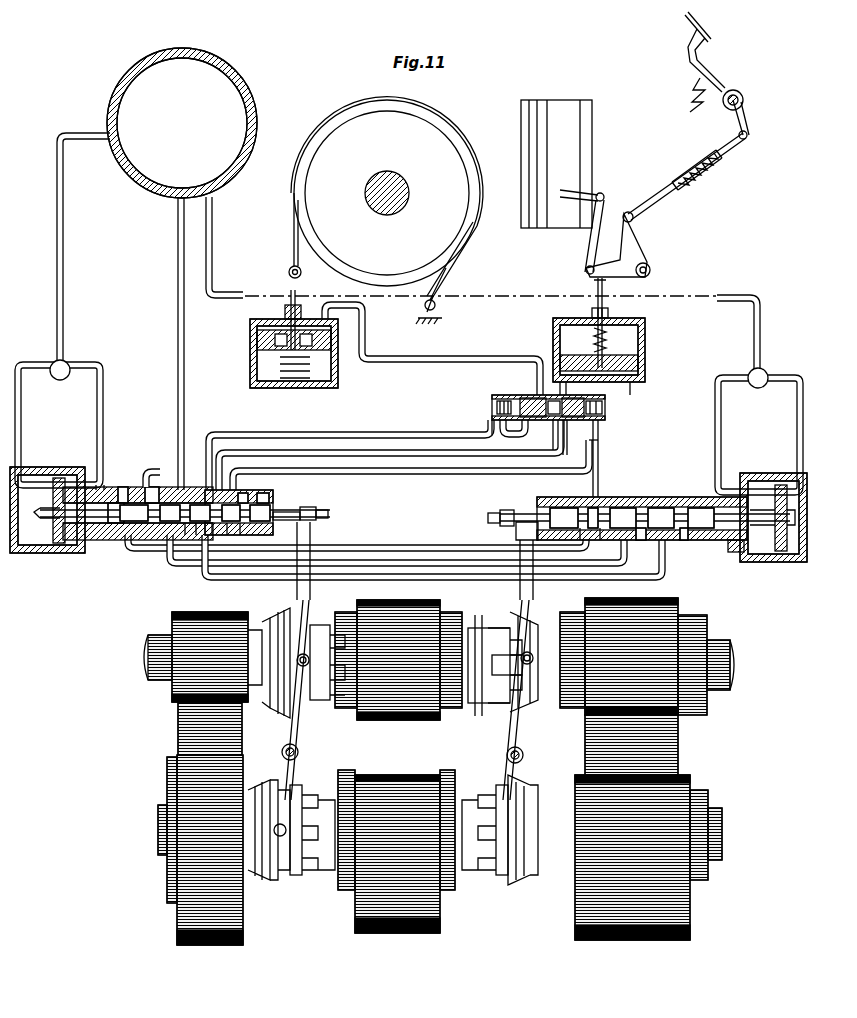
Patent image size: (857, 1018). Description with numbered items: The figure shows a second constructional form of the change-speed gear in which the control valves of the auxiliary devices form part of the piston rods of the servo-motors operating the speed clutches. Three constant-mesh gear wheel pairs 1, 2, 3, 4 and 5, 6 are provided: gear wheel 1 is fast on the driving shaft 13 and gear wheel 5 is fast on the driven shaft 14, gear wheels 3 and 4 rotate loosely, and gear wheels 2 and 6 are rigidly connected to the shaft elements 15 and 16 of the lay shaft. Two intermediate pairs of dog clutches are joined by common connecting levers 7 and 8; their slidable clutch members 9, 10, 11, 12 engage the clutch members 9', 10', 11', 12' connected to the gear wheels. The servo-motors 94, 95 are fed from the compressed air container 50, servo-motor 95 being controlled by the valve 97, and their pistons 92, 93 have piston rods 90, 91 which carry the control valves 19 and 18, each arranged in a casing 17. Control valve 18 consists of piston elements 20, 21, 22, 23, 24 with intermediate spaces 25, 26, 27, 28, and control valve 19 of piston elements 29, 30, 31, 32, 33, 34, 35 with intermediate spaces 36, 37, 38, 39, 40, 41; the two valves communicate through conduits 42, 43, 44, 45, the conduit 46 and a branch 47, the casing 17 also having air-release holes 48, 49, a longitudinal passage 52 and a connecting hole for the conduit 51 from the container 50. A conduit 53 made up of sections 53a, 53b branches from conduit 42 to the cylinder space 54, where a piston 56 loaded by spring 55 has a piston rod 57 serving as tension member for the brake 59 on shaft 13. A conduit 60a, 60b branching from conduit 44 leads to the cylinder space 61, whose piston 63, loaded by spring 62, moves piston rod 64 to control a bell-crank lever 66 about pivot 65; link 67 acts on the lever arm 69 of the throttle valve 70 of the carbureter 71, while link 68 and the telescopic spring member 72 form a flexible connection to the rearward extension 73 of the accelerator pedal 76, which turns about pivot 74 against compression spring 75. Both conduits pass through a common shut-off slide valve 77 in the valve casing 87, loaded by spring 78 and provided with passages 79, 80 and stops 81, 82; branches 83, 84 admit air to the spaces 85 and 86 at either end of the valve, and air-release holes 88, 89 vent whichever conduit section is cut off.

The gear wheel 1 is at (200, 670).
The gear wheel 2 is at (215, 900).
The gear wheel 3 is at (380, 708).
The gear wheel 4 is at (405, 890).
The gear wheel 5 is at (660, 690).
The gear wheel 6 is at (628, 890).
The connecting lever 7 is at (292, 728).
The connecting lever 8 is at (512, 737).
The slidable clutch member 9 is at (268, 668).
The clutch member 9' is at (321, 611).
The slidable clutch member 10 is at (269, 814).
The clutch member 10' is at (317, 811).
The slidable clutch member 11 is at (503, 619).
The clutch member 11' is at (502, 678).
The slidable clutch member 12 is at (532, 819).
The clutch member 12' is at (485, 852).
The driving shaft 13 is at (412, 193).
The driven shaft 14 is at (722, 660).
The shaft element 15 is at (160, 838).
The shaft element 16 is at (720, 840).
The casing 17 is at (273, 498).
The control valve 18 is at (506, 527).
The control valve 19 is at (312, 510).
The piston element 20 is at (728, 545).
The piston element 21 is at (690, 540).
The piston element 22 is at (648, 540).
The piston element 23 is at (620, 540).
The piston element 24 is at (566, 508).
The intermediate space 25 is at (700, 508).
The intermediate space 26 is at (660, 508).
The intermediate space 27 is at (624, 508).
The intermediate space 28 is at (598, 505).
The piston element 29 is at (268, 488).
The piston element 30 is at (246, 488).
The piston element 31 is at (222, 490).
The piston element 32 is at (196, 536).
The piston element 33 is at (146, 540).
The piston element 34 is at (112, 540).
The piston element 35 is at (114, 486).
The intermediate space 36 is at (286, 524).
The intermediate space 37 is at (242, 536).
The intermediate space 38 is at (213, 536).
The intermediate space 39 is at (182, 536).
The intermediate space 40 is at (156, 487).
The intermediate space 41 is at (124, 487).
The conduit 42 is at (390, 474).
The conduit 43 is at (556, 580).
The conduit 44 is at (372, 455).
The conduit 45 is at (380, 540).
The conduit 46 is at (425, 562).
The branch 47 is at (664, 572).
The air-release hole 48 is at (228, 536).
The air-release hole 49 is at (120, 485).
The compressed air container 50 is at (249, 100).
The conduit 51 is at (178, 322).
The longitudinal passage 52 is at (184, 487).
The conduit 53 is at (448, 288).
The conduit section 53a is at (345, 436).
The conduit section 53b is at (440, 361).
The cylinder space 54 is at (312, 328).
The spring 55 is at (288, 372).
The piston 56 is at (262, 346).
The piston rod 57 is at (243, 295).
The brake 59 is at (452, 228).
The conduit section 60a is at (599, 440).
The conduit section 60b is at (606, 396).
The cylinder space 61 is at (632, 384).
The spring 62 is at (612, 340).
The piston 63 is at (640, 362).
The piston rod 64 is at (596, 292).
The pivot 65 is at (650, 269).
The bell-crank lever 66 is at (636, 258).
The link 67 is at (588, 248).
The link 68 is at (650, 196).
The lever arm 69 is at (602, 193).
The throttle valve 70 is at (560, 193).
The carbureter 71 is at (580, 128).
The telescopic spring member 72 is at (698, 170).
The rearward extension 73 is at (740, 125).
The pivot 74 is at (745, 93).
The compression spring 75 is at (698, 84).
The accelerator pedal 76 is at (690, 40).
The shut-off slide valve 77 is at (558, 439).
The spring 78 is at (492, 402).
The passage 79 is at (530, 398).
The passage 80 is at (585, 410).
The stop 81 is at (490, 418).
The stop 82 is at (604, 408).
The branch conduit 83 is at (425, 436).
The branch conduit 84 is at (600, 450).
The space 85 is at (496, 397).
The space 86 is at (602, 400).
The valve casing 87 is at (538, 370).
The air-release hole 88 is at (516, 427).
The air-release hole 89 is at (577, 437).
The piston rod 90 is at (90, 492).
The piston rod 91 is at (762, 510).
The piston 92 is at (58, 545).
The piston 93 is at (780, 554).
The servo-motor 94 is at (28, 553).
The servo-motor 95 is at (800, 562).
The valve 97 is at (68, 368).